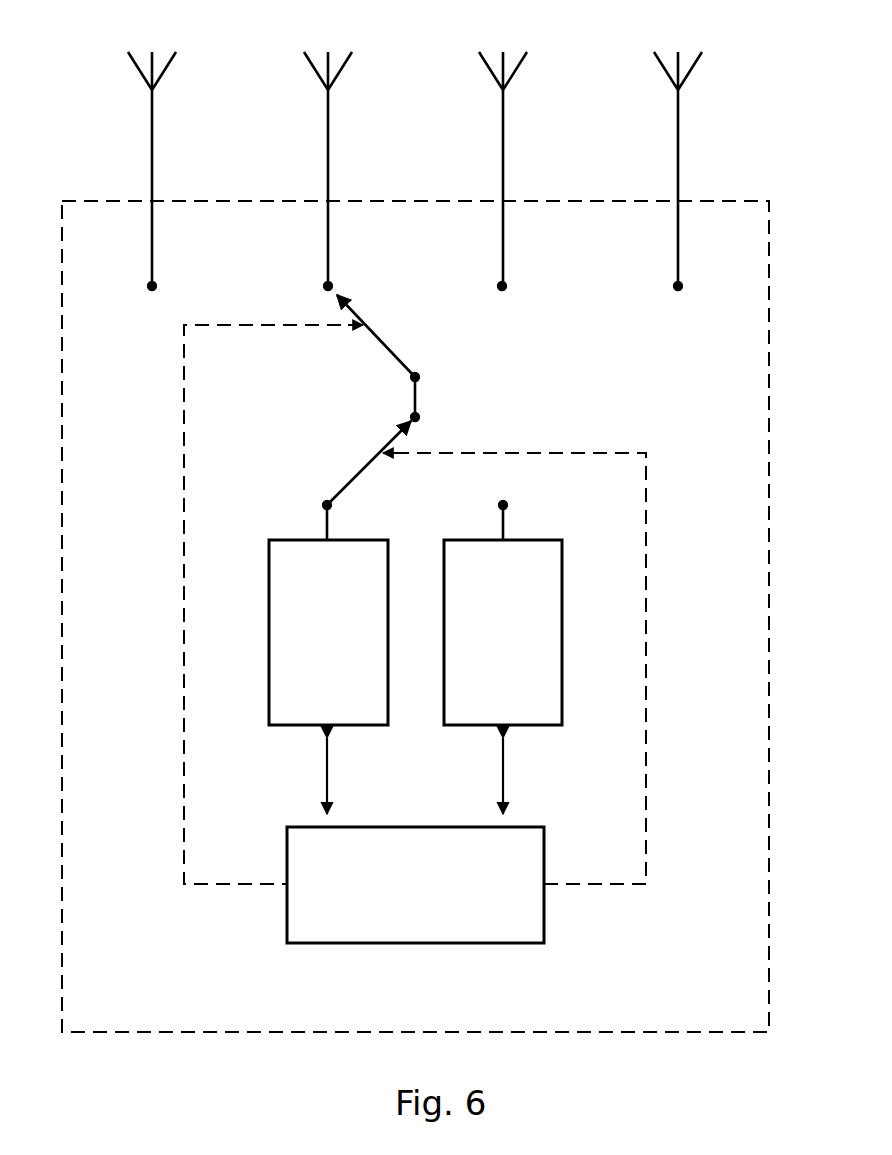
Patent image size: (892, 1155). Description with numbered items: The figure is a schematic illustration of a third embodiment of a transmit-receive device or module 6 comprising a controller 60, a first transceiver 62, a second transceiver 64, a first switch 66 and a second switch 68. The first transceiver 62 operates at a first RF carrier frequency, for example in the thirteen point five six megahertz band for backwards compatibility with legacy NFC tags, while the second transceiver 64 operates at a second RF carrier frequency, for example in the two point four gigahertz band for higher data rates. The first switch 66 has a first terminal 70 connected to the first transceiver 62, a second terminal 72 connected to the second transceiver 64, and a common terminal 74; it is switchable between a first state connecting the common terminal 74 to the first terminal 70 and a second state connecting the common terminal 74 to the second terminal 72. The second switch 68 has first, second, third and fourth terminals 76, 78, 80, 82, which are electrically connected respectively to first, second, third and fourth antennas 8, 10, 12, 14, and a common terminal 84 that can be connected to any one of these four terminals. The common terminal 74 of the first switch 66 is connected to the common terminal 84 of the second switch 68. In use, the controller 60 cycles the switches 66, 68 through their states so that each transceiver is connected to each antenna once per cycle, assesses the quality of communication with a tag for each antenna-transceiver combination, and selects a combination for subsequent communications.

The transmit-receive device 6 is at (771, 491).
The first antenna 8 is at (150, 63).
The second antenna 10 is at (326, 63).
The third antenna 12 is at (501, 63).
The fourth antenna 14 is at (676, 63).
The controller 60 is at (524, 912).
The first transceiver 62 is at (288, 702).
The second transceiver 64 is at (544, 702).
The first switch 66 is at (363, 466).
The second switch 68 is at (390, 355).
The first terminal 70 is at (324, 503).
The second terminal 72 is at (507, 503).
The common terminal 74 is at (419, 420).
The first terminal 76 is at (156, 284).
The second terminal 78 is at (333, 284).
The third terminal 80 is at (507, 284).
The fourth terminal 82 is at (683, 284).
The common terminal 84 is at (419, 375).